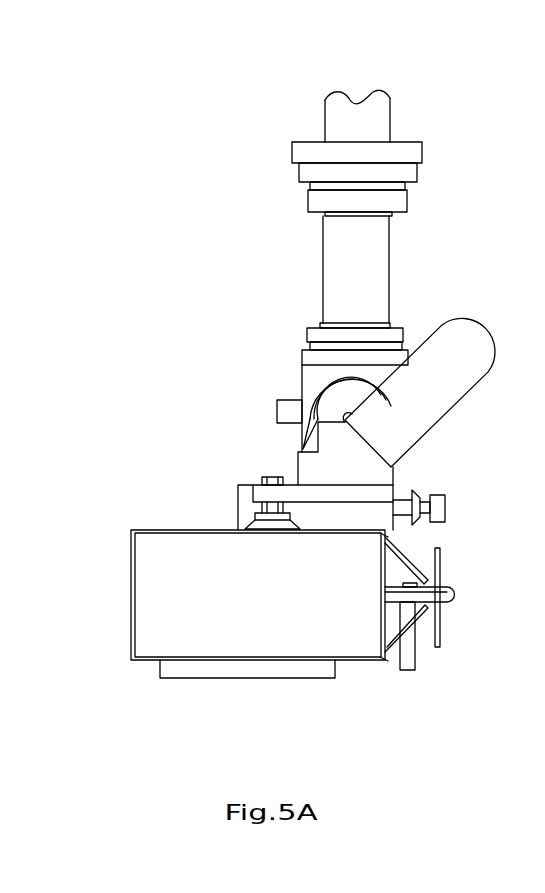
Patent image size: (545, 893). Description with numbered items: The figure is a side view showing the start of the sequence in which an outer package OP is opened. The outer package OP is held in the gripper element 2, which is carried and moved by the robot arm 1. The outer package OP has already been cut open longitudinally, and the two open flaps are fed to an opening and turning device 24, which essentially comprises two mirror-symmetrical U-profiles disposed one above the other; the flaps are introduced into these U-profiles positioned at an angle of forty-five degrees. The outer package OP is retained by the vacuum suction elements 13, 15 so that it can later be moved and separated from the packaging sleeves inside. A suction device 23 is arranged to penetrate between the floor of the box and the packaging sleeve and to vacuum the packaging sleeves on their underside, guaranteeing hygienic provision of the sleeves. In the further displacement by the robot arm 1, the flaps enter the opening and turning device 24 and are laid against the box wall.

The robot arm 1 is at (375, 273).
The gripper element 2 is at (363, 493).
The vacuum suction element 13 is at (250, 520).
The vacuum suction element 15 is at (418, 493).
The suction device 23 is at (392, 625).
The opening and turning device 24 is at (455, 562).
The outer package OP is at (192, 638).